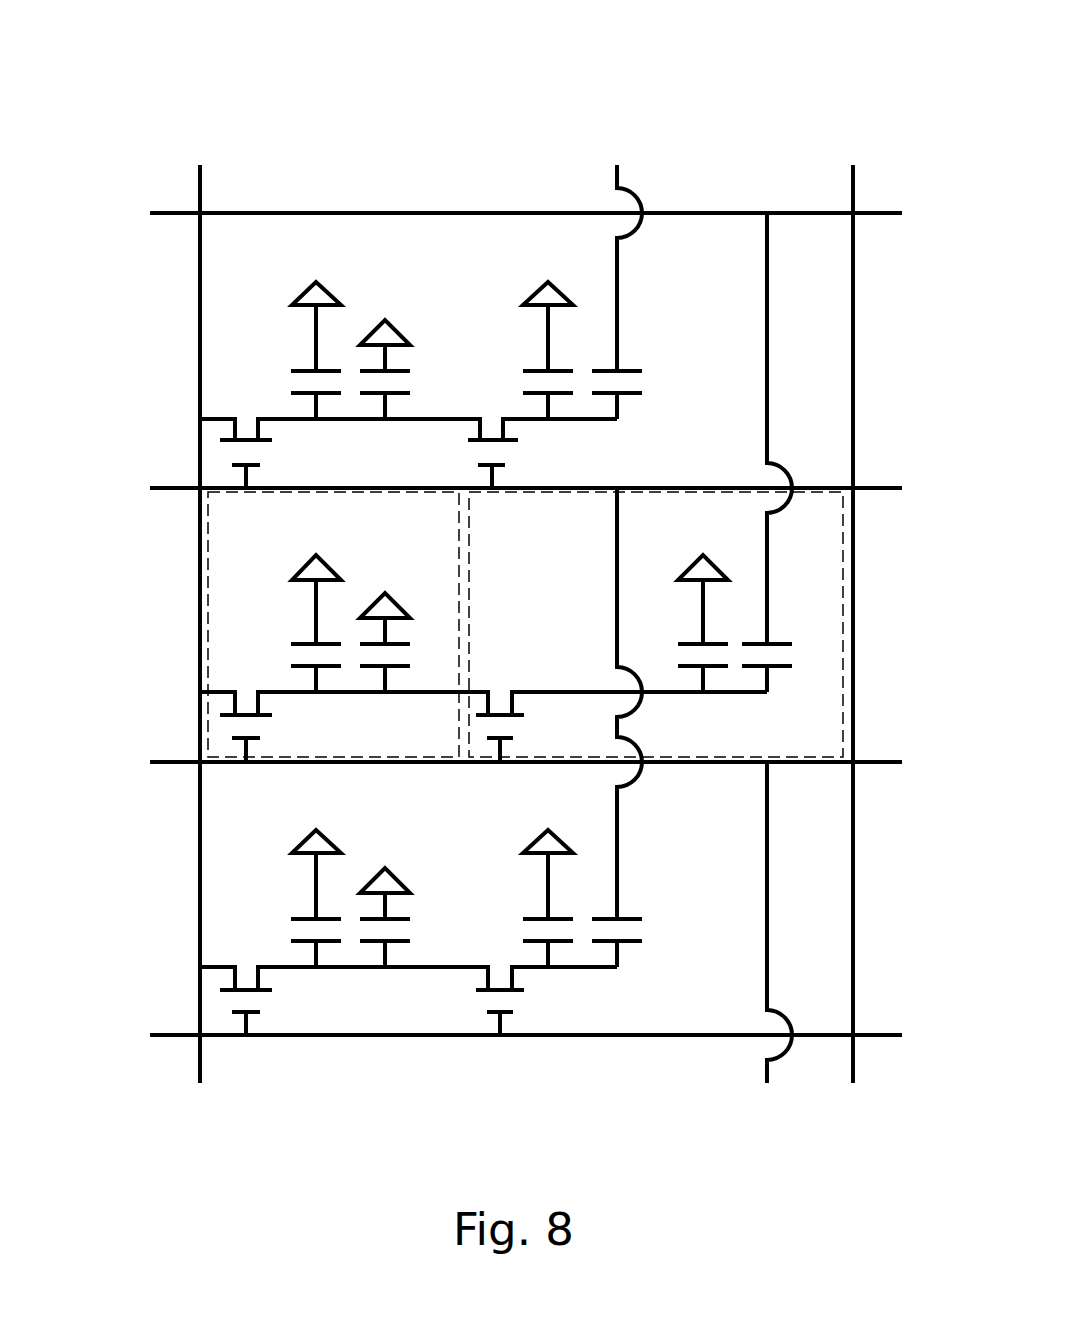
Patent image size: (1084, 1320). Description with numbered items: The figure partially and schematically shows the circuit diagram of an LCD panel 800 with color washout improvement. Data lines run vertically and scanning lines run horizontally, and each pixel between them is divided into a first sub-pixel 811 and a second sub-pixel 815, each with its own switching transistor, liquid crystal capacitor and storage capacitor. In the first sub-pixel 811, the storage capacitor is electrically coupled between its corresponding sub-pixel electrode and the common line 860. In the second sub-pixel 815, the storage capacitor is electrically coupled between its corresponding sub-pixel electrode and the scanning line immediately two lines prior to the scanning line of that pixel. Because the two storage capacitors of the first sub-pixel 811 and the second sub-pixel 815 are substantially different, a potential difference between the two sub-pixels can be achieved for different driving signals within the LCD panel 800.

The LCD panel 800 is at (538, 38).
The first sub-pixel 811 is at (300, 627).
The second sub-pixel 815 is at (822, 597).
The common line 860 is at (387, 595).